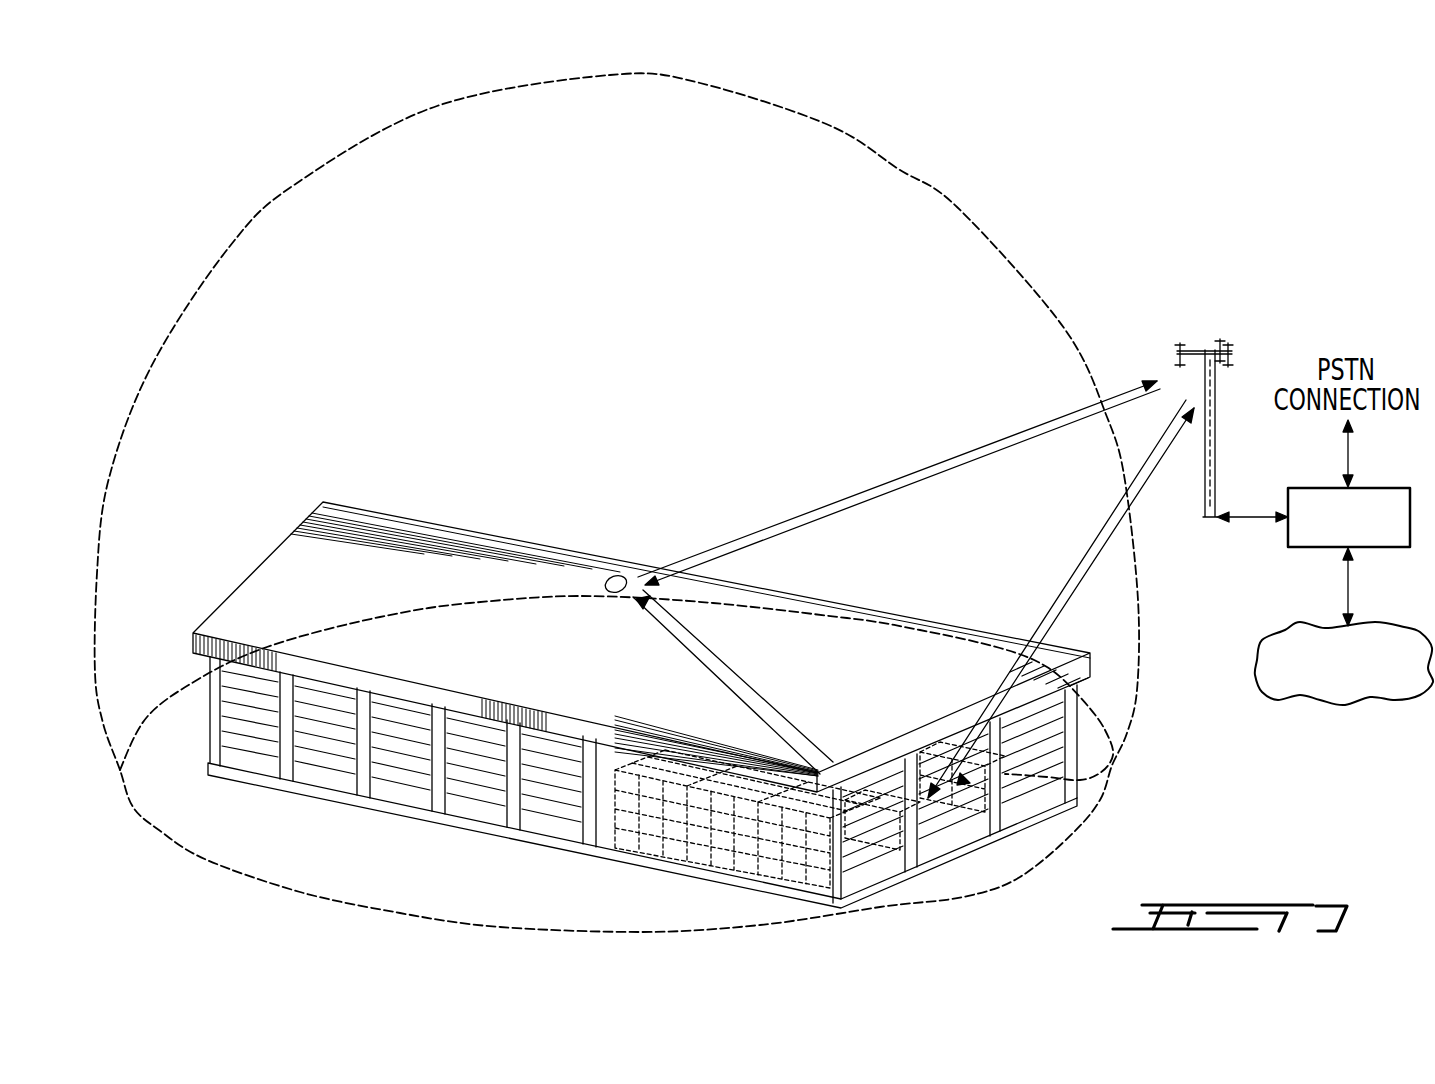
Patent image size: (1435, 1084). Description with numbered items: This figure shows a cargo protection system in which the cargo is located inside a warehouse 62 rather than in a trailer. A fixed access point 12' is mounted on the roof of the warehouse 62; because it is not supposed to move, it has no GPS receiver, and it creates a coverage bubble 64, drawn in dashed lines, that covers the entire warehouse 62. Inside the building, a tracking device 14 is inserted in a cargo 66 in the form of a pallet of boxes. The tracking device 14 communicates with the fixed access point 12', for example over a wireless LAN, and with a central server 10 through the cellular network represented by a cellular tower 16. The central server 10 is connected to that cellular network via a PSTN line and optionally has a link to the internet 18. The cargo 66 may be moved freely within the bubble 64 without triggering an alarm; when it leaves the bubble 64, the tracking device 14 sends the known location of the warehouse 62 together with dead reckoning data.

The central server 10 is at (1296, 545).
The fixed access point 12' is at (881, 577).
The tracking device 14 is at (955, 786).
The cellular tower 16 is at (1205, 490).
The internet 18 is at (1368, 682).
The warehouse 62 is at (365, 513).
The bubble 64 is at (230, 246).
The cargo 66 is at (1103, 778).